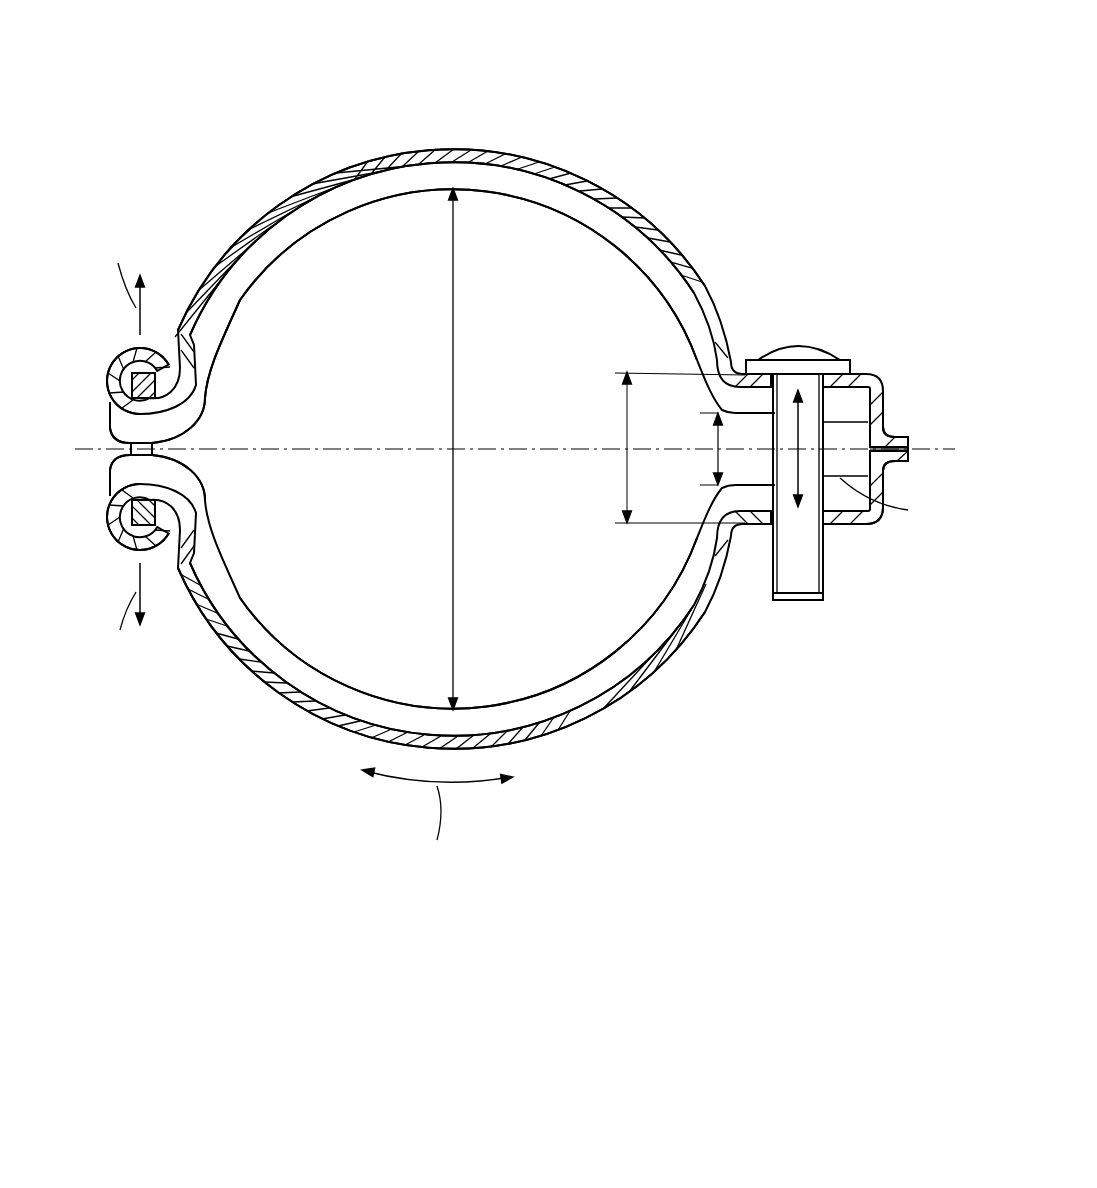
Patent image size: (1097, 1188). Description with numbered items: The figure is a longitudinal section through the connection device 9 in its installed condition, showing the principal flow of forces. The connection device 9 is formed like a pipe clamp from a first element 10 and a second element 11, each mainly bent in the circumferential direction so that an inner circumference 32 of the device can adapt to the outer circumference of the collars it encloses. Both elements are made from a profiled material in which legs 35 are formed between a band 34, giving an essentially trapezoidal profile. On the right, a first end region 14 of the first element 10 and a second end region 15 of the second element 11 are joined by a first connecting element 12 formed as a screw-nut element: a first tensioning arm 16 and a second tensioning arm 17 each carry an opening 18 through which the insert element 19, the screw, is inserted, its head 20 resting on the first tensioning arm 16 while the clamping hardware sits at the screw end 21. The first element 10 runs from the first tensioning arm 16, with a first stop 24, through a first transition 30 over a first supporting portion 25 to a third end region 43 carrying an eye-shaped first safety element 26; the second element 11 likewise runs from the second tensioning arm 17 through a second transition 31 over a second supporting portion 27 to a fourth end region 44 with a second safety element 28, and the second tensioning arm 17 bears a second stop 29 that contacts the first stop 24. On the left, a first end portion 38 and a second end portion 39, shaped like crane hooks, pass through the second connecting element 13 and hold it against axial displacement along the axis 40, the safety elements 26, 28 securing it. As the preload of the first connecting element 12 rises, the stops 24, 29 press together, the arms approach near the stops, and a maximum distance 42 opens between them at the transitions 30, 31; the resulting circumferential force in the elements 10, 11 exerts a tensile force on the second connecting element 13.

The connection device 9 is at (765, 172).
The first element 10 is at (448, 140).
The second element 11 is at (548, 740).
The first connecting element 12 is at (807, 463).
The second connecting element 13 is at (195, 422).
The first end region 14 is at (894, 452).
The second end region 15 is at (886, 530).
The first tensioning arm 16 is at (850, 408).
The second tensioning arm 17 is at (852, 497).
The opening 18 is at (835, 360).
The insert element 19 is at (788, 545).
The head 20 is at (757, 355).
The screw end 21 is at (797, 606).
The first stop 24 is at (902, 437).
The first supporting portion 25 is at (540, 190).
The first safety element 26 is at (146, 350).
The second supporting portion 27 is at (600, 702).
The second safety element 28 is at (146, 546).
The second stop 29 is at (903, 458).
The first transition 30 is at (742, 370).
The second transition 31 is at (746, 526).
The inner circumference 32 is at (413, 165).
The band 34 is at (330, 178).
The legs 35 is at (330, 205).
The first end portion 38 is at (110, 410).
The second end portion 39 is at (112, 480).
The axis 40 is at (503, 445).
The maximum distance 42 is at (718, 460).
The third end region 43 is at (104, 335).
The fourth end region 44 is at (104, 563).